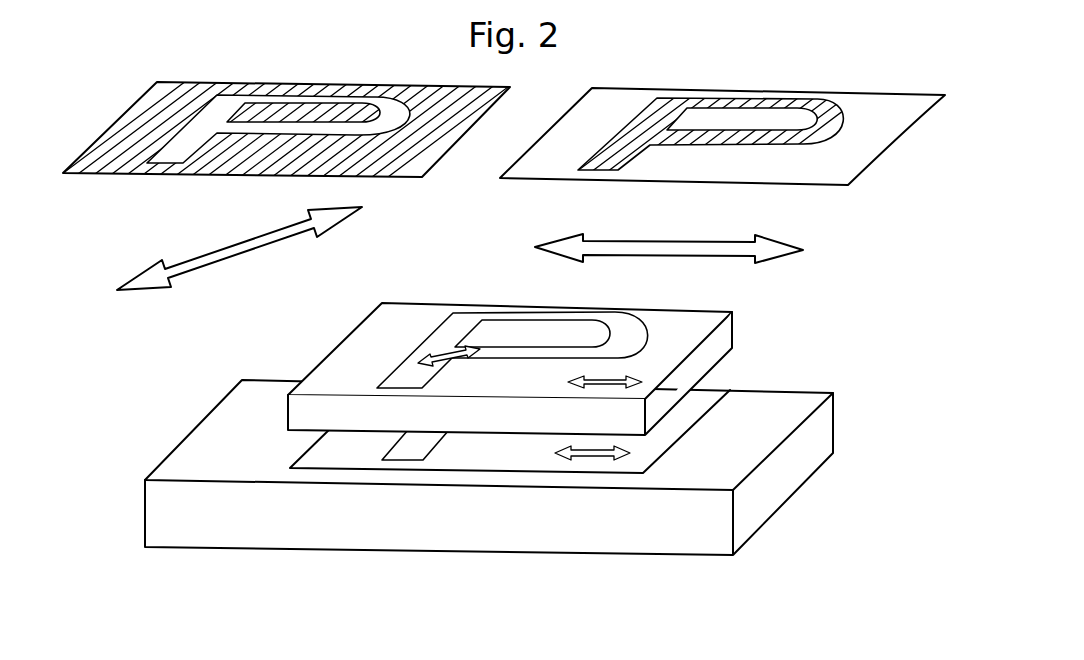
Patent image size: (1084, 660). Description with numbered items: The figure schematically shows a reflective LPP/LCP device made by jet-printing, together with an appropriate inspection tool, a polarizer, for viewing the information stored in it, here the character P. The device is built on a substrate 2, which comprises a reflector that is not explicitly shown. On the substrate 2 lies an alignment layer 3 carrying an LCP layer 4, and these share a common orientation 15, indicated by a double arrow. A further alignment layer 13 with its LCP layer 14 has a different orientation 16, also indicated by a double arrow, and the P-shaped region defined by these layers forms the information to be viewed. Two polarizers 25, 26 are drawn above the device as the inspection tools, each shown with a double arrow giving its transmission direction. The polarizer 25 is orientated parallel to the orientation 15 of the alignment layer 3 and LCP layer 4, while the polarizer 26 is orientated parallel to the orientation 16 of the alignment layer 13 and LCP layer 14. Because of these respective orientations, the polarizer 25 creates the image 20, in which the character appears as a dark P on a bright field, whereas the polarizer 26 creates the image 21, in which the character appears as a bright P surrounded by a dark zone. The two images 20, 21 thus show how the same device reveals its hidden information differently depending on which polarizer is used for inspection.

The substrate 2 is at (825, 443).
The alignment layer 3 is at (693, 398).
The LCP layer 4 is at (725, 347).
The alignment layer 13 is at (412, 445).
The LCP layer 14 is at (623, 342).
The orientation 15 is at (592, 460).
The orientation 16 is at (417, 359).
The image 20 is at (841, 88).
The image 21 is at (214, 78).
The polarizer 25 is at (667, 240).
The polarizer 26 is at (228, 242).